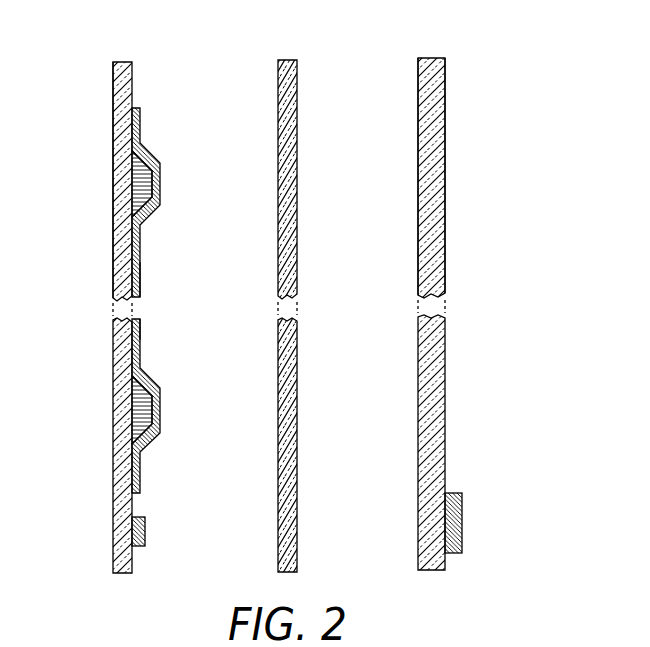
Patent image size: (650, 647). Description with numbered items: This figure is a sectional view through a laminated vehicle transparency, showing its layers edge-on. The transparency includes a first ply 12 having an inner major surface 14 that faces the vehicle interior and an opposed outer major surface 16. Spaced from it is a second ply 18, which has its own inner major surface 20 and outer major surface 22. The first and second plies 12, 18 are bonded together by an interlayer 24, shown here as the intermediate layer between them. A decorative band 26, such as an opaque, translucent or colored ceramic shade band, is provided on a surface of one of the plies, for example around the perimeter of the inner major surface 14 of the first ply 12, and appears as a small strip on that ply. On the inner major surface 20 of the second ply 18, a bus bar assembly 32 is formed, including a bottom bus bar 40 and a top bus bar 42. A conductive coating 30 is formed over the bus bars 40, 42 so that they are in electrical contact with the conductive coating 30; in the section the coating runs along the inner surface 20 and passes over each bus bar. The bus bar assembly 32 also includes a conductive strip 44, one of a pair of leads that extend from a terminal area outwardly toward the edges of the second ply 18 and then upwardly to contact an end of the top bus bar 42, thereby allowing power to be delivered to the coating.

The first ply 12 is at (432, 58).
The inner major surface 14 is at (445, 138).
The outer major surface 16 is at (420, 113).
The second ply 18 is at (121, 62).
The inner major surface 20 is at (132, 84).
The outer major surface 22 is at (112, 105).
The interlayer 24 is at (287, 60).
The decorative band 26 is at (463, 528).
The conductive coating 30 is at (142, 266).
The bus bar assembly 32 is at (130, 292).
The bottom bus bar 40 is at (142, 417).
The top bus bar 42 is at (133, 184).
The conductive strip 44 is at (145, 532).